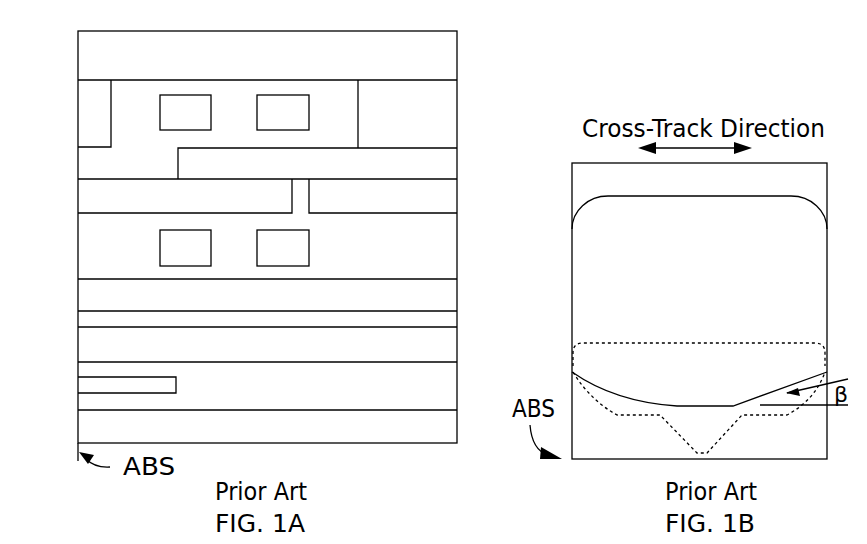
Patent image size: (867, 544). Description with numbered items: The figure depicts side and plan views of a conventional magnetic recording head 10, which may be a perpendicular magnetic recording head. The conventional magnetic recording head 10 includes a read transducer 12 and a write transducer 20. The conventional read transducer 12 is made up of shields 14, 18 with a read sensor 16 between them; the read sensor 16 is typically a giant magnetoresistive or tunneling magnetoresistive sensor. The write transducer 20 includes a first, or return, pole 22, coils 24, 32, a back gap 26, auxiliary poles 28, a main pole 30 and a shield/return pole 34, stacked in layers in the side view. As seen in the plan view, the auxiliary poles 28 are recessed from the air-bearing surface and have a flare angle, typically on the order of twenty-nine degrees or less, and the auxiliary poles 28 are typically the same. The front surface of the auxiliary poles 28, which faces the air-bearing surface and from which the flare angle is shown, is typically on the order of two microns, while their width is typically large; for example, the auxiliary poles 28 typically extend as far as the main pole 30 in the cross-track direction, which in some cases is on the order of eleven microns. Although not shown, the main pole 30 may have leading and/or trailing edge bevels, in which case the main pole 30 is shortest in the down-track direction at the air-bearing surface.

In FIG. 1A, the magnetic recording head 10 is at (43, 43).
In FIG. 1B, the magnetic recording head 10 is at (718, 92).
In FIG. 1A, the read transducer 12 is at (50, 353).
In FIG. 1A, the shield 14 is at (457, 428).
In FIG. 1A, the read sensor 16 is at (78, 385).
In FIG. 1A, the shield 18 is at (457, 344).
In FIG. 1A, the write transducer 20 is at (50, 137).
In FIG. 1A, the return pole 22 is at (78, 295).
In FIG. 1A, the coils 24 is at (112, 262).
In FIG. 1A, the back gap 26 is at (457, 103).
In FIG. 1A, the auxiliary poles 28 is at (457, 160).
In FIG. 1B, the auxiliary poles 28 is at (572, 328).
In FIG. 1A, the main pole 30 is at (78, 197).
In FIG. 1B, the main pole 30 is at (762, 415).
In FIG. 1A, the coils 32 is at (120, 113).
In FIG. 1A, the shield/return pole 34 is at (457, 45).